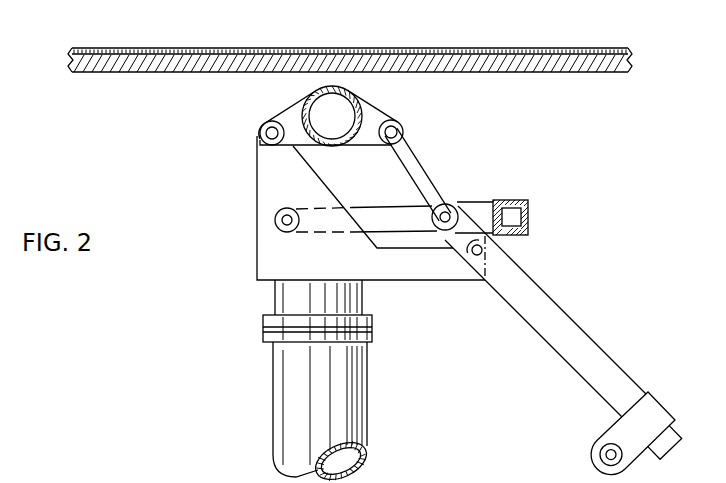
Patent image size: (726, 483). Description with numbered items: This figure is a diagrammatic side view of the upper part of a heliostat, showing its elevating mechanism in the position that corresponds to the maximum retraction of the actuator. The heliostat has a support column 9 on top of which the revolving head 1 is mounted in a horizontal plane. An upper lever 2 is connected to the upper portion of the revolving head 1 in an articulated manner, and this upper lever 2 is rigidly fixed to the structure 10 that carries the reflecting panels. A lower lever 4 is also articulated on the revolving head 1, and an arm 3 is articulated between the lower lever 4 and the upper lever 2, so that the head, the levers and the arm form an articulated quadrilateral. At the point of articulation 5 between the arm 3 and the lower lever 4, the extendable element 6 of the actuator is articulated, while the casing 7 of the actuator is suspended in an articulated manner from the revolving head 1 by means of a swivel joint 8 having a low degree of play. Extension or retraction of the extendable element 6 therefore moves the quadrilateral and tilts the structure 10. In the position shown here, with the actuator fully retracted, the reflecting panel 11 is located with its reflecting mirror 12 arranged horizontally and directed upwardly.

The revolving head 1 is at (273, 188).
The upper lever 2 is at (353, 79).
The arm 3 is at (412, 163).
The lower lever 4 is at (388, 213).
The point of articulation 5 is at (451, 204).
The extendable element 6 is at (453, 248).
The casing 7 is at (563, 340).
The swivel joint 8 is at (475, 256).
The support column 9 is at (353, 393).
The structure 10 is at (340, 88).
The reflecting panel 11 is at (358, 39).
The reflecting mirror 12 is at (487, 50).